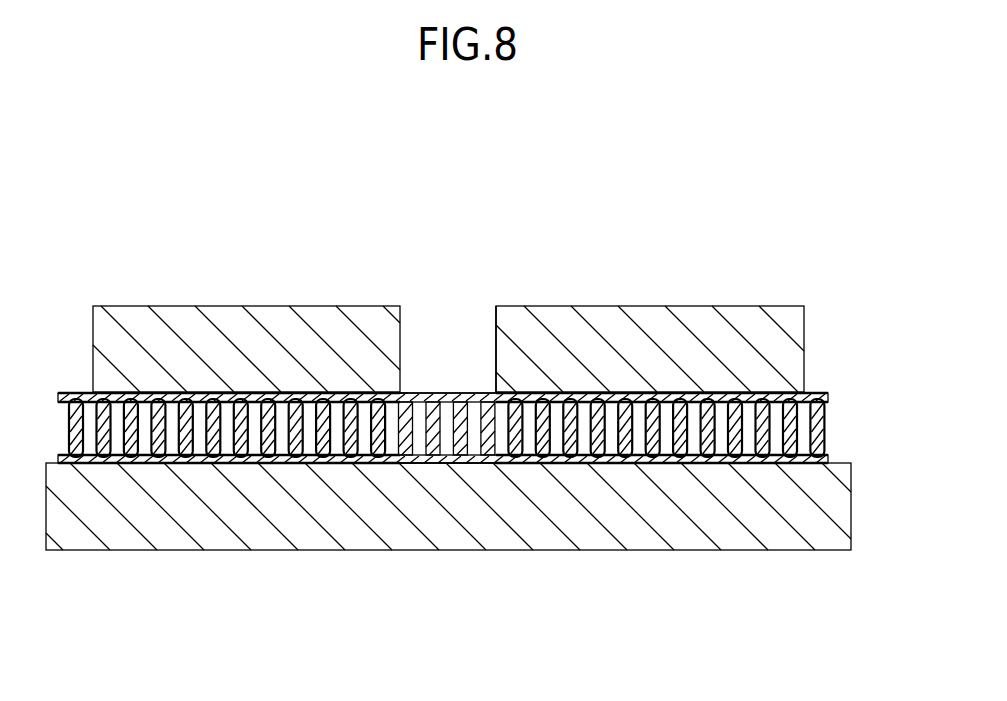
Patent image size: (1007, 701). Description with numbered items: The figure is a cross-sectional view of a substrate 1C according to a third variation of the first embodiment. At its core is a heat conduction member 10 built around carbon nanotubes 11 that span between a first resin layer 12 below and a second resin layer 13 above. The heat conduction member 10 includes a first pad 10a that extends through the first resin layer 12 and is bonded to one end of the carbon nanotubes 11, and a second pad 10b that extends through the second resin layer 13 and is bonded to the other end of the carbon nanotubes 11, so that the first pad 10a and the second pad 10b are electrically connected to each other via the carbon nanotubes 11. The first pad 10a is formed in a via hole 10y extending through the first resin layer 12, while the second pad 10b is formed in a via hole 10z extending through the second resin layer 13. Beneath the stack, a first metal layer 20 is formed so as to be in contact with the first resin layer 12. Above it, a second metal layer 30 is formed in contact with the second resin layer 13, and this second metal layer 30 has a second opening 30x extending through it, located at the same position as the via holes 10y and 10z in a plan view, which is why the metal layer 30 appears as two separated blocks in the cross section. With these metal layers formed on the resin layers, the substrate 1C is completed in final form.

The substrate 1C is at (68, 192).
The heat conduction member 10 is at (502, 407).
The first pad 10a is at (460, 464).
The second pad 10b is at (451, 398).
The via hole 10y is at (402, 464).
The via hole 10z is at (401, 394).
The carbon nanotubes 11 is at (825, 428).
The first resin layer 12 is at (826, 459).
The second resin layer 13 is at (826, 397).
The first metal layer 20 is at (832, 507).
The second metal layer 30 is at (790, 349).
The second opening 30x is at (497, 334).